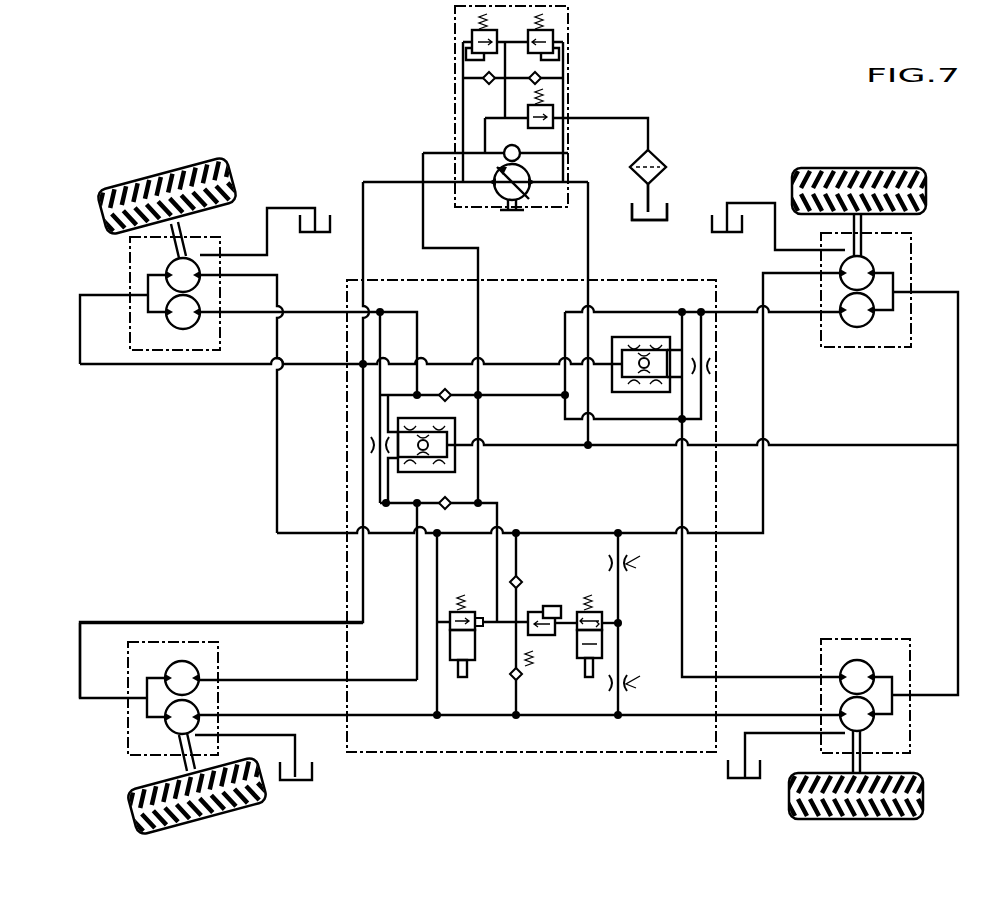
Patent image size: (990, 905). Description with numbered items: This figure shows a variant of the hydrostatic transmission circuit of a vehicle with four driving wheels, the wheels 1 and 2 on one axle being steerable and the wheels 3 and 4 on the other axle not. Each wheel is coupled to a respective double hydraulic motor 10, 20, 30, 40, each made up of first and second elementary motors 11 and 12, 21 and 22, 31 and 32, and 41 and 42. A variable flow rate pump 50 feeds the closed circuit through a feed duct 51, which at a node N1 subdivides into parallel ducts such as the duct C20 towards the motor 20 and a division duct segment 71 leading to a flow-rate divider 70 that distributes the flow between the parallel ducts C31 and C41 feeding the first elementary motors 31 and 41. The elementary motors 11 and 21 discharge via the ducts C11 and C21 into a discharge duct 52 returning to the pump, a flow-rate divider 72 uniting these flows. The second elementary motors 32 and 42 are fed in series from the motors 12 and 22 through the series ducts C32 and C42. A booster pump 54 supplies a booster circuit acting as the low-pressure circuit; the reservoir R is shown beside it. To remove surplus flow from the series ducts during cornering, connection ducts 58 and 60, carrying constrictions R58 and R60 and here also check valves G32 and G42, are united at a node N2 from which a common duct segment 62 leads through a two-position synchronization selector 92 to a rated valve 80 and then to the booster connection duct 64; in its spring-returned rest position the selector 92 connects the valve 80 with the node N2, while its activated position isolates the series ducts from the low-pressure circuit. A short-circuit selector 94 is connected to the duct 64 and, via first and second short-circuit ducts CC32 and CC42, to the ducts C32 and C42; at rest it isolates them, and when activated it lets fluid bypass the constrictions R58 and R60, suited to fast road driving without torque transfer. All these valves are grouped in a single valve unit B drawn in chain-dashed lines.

The steerable driving wheel 1 is at (162, 176).
The steerable driving wheel 2 is at (214, 812).
The non-steerable driving wheel 3 is at (856, 167).
The non-steerable driving wheel 4 is at (926, 792).
The hydraulic motor 10 is at (205, 370).
The first elementary motor 11 is at (183, 329).
The second elementary motor 12 is at (190, 270).
The hydraulic motor 20 is at (196, 694).
The first elementary motor 21 is at (182, 661).
The second elementary motor 22 is at (178, 734).
The hydraulic motor 30 is at (835, 449).
The first elementary motor 31 is at (860, 328).
The second elementary motor 32 is at (843, 280).
The hydraulic motor 40 is at (837, 688).
The first elementary motor 41 is at (858, 660).
The second elementary motor 42 is at (870, 724).
The variable flow rate pump 50 is at (530, 207).
The feed duct 51 is at (393, 182).
The discharge duct 52 is at (559, 136).
The booster pump 54 is at (520, 153).
The connection duct 58 is at (625, 566).
The connection duct 60 is at (622, 628).
The common duct segment 62 is at (622, 645).
The booster connection duct 64 is at (478, 418).
The flow-rate divider 70 is at (642, 337).
The division duct segment 71 is at (526, 366).
The flow-rate divider 72 is at (447, 463).
The rated valve 80 is at (530, 612).
The synchronization selector 92 is at (600, 610).
The short-circuit selector 94 is at (473, 600).
The reservoir R is at (668, 214).
The valve unit B is at (455, 755).
The duct C11 is at (318, 312).
The parallel duct C20 is at (278, 622).
The duct C21 is at (278, 678).
The parallel duct C31 is at (740, 312).
The series duct C32 is at (571, 532).
The parallel duct C41 is at (762, 677).
The series duct C42 is at (400, 716).
The first short-circuit duct CC32 is at (418, 570).
The second short-circuit duct CC42 is at (440, 697).
The check valve G32 is at (518, 556).
The check valve G42 is at (520, 678).
The node N1 is at (360, 368).
The node N2 is at (622, 621).
The constriction R58 is at (643, 554).
The constriction R60 is at (643, 689).